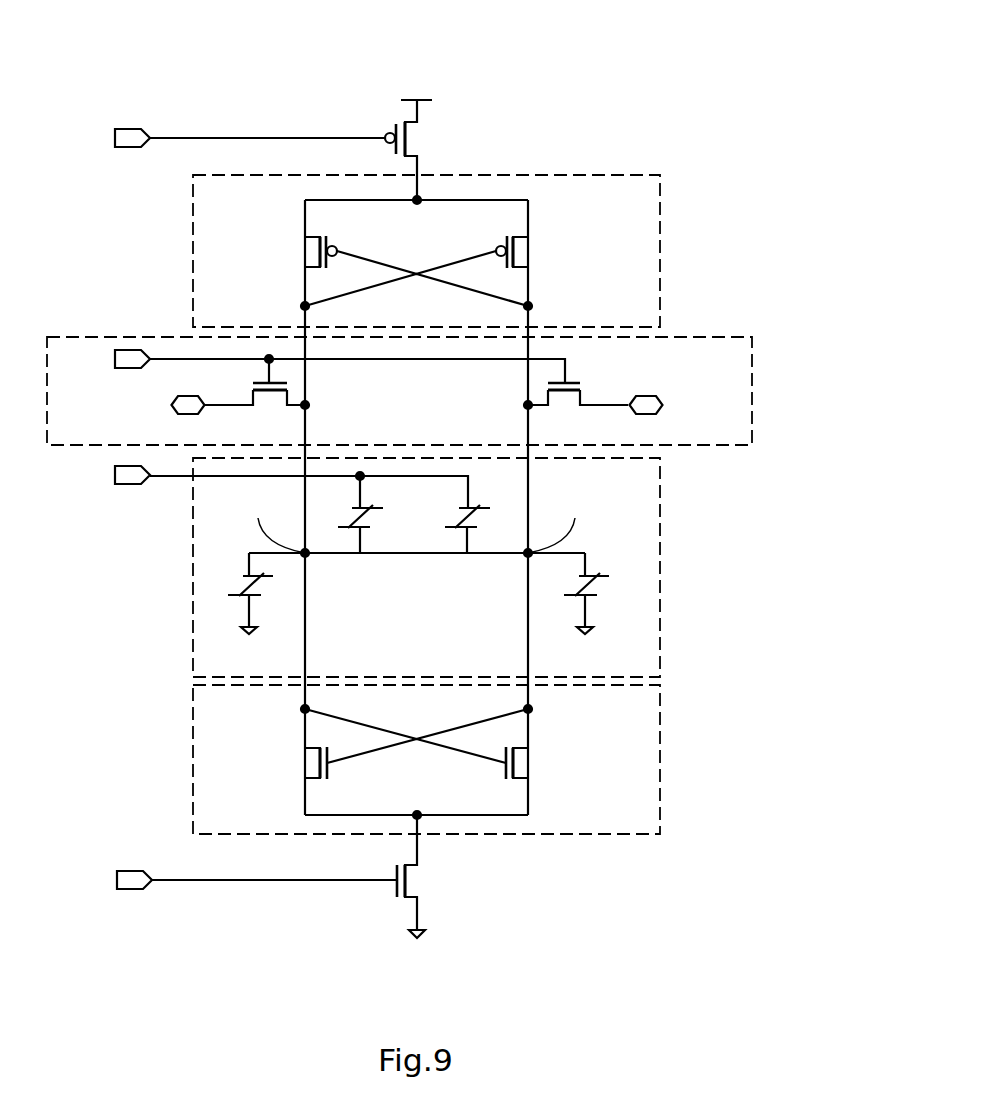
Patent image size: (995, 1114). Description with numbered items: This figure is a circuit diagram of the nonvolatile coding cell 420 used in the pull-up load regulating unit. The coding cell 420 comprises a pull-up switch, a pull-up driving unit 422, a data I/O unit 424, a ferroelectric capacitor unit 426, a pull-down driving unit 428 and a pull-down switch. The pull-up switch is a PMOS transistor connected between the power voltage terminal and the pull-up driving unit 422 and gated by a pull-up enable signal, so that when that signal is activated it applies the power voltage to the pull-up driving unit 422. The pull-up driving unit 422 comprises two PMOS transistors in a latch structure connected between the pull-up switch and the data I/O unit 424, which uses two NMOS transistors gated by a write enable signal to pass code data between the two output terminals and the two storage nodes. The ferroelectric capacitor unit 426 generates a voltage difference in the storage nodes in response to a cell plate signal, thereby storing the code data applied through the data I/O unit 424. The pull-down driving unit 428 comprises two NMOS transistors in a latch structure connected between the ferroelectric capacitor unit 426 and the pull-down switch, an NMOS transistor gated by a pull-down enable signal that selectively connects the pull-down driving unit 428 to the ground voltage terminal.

The nonvolatile coding cell 420 is at (671, 75).
The pull-up driving unit 422 is at (660, 221).
The data I/O unit 424 is at (752, 383).
The ferroelectric capacitor unit 426 is at (660, 568).
The pull-down driving unit 428 is at (660, 750).